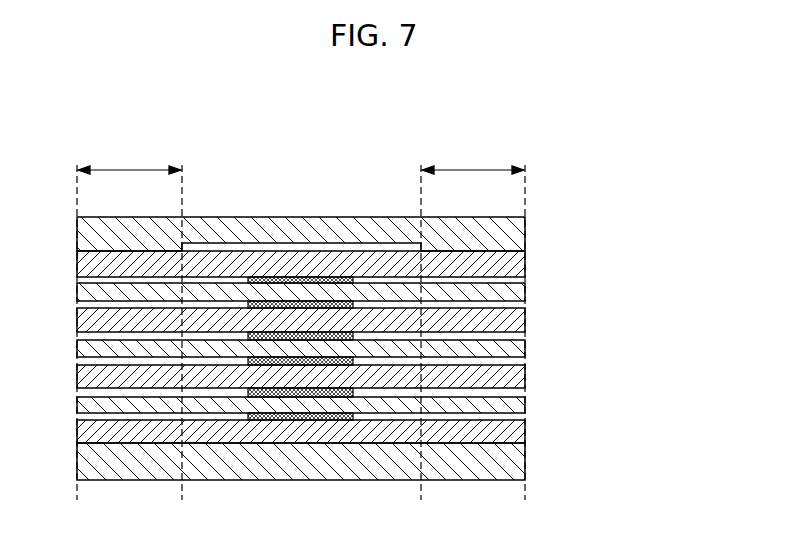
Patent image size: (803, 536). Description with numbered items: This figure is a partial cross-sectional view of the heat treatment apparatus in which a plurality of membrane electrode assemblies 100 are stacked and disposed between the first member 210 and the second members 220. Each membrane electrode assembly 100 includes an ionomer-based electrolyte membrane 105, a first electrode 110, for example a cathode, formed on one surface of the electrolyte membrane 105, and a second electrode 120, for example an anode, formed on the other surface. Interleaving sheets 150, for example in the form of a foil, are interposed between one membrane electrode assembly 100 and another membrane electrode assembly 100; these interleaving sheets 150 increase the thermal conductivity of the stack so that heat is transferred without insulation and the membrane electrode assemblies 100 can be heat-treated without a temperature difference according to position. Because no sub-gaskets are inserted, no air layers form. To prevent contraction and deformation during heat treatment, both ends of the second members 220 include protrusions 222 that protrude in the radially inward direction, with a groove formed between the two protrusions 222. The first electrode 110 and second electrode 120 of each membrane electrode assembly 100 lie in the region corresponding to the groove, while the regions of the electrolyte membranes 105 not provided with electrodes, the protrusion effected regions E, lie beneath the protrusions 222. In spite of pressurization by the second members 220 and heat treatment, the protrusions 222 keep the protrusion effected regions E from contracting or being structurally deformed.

The protrusion effected region E is at (463, 170).
The membrane electrode assembly 100 is at (610, 334).
The electrolyte membrane 105 is at (466, 353).
The first electrode 110 is at (353, 335).
The second electrode 120 is at (353, 363).
The interleaving sheet 150 is at (519, 263).
The first member 210 is at (516, 462).
The second member 220 is at (516, 208).
The protrusion 222 is at (512, 237).